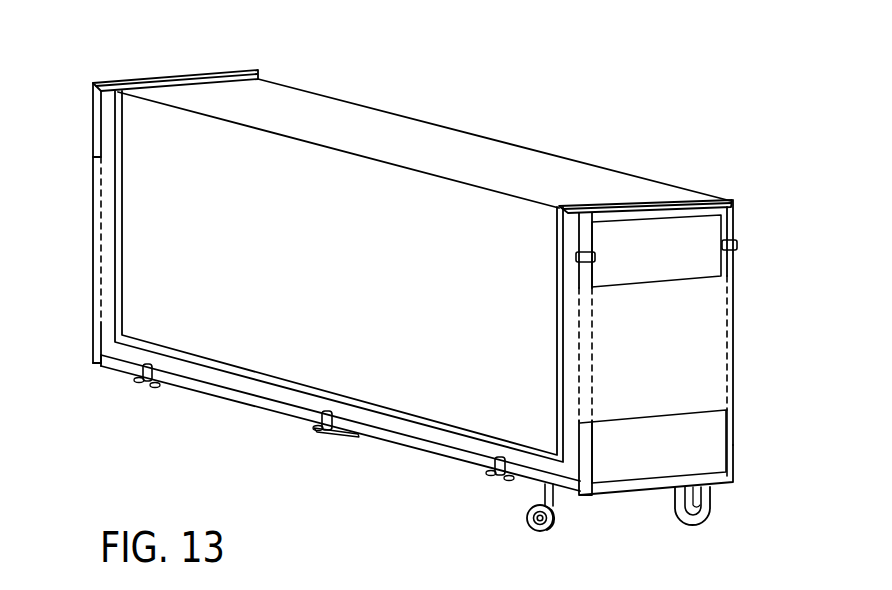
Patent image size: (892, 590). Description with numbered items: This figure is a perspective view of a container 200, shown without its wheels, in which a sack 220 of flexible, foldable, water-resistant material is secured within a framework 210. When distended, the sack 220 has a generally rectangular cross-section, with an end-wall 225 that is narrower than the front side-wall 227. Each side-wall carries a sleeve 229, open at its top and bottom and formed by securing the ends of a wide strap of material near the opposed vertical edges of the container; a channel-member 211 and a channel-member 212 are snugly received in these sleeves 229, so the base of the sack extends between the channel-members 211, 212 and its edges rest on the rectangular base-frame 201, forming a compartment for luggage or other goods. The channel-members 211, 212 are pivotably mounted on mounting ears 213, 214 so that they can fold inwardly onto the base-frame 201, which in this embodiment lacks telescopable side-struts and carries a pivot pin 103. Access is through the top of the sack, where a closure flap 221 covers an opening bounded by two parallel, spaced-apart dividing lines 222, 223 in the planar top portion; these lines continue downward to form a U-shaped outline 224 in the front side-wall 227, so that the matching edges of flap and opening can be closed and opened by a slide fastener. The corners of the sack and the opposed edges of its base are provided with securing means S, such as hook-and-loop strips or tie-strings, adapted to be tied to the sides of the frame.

The container 200 is at (517, 80).
The sack 220 is at (330, 99).
The closure flap 221 is at (529, 161).
The dividing line 222 is at (181, 72).
The dividing line 223 is at (650, 201).
The U-shaped outline 224 is at (215, 361).
The end-wall 225 is at (683, 464).
The front side-wall 227 is at (188, 372).
The sleeve 229 is at (607, 418).
The base-frame 201 is at (270, 412).
The pivot pin 103 is at (337, 437).
The framework 210 is at (414, 456).
The channel-member 211 is at (95, 300).
The channel-member 212 is at (734, 418).
The mounting ear 213 is at (734, 468).
The mounting ear 214 is at (95, 362).
The securing means S is at (503, 478).